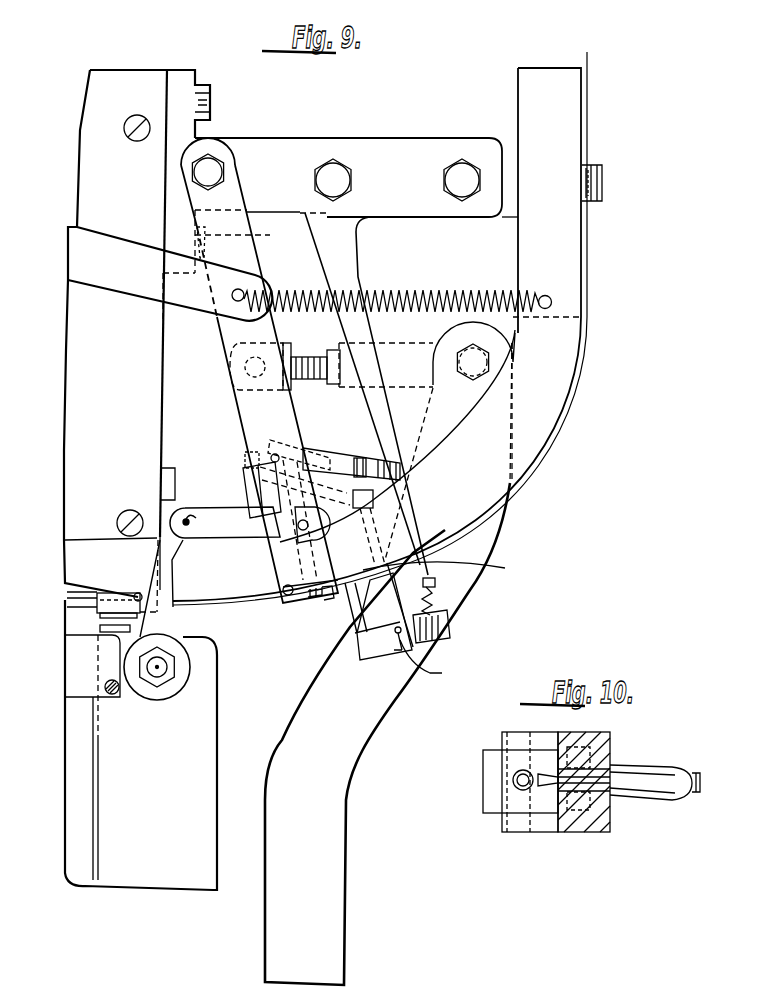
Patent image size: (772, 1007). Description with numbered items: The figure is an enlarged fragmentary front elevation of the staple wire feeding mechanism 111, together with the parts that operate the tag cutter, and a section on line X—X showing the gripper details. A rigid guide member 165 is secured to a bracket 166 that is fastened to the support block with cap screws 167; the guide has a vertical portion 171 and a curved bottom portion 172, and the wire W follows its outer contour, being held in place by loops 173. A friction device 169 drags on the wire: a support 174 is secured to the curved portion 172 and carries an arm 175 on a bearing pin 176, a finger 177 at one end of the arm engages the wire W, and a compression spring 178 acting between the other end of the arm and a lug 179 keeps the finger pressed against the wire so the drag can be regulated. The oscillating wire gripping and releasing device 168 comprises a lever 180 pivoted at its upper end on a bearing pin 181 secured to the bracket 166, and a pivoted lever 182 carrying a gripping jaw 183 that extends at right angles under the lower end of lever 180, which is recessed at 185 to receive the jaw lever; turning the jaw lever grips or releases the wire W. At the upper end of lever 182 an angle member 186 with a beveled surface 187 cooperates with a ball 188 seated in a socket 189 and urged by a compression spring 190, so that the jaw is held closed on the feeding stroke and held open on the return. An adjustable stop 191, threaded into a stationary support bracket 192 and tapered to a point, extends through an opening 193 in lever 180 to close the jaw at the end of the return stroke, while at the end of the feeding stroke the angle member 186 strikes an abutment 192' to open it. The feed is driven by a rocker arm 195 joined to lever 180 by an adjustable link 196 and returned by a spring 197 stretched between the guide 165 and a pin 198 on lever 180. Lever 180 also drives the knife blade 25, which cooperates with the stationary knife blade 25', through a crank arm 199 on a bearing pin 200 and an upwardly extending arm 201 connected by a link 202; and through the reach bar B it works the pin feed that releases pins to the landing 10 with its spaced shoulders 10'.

In FIG. 9, the reach bar B is at (113, 283).
In FIG. 9, the landing 10 is at (87, 612).
In FIG. 9, the spaced shoulders 10' is at (61, 644).
In FIG. 9, the knife blade 25 is at (116, 563).
In FIG. 9, the stationary knife blade 25' is at (68, 687).
In FIG. 9, the staple wire feeding mechanism 111 is at (233, 439).
In FIG. 9, the rigid guide member 165 is at (619, 137).
In FIG. 9, the bracket 166 is at (273, 147).
In FIG. 9, the cap screws 167 is at (210, 94).
In FIG. 9, the oscillating wire gripping and releasing device 168 is at (298, 579).
In FIG. 9, the friction device 169 is at (348, 632).
In FIG. 9, the vertical portion 171 is at (523, 97).
In FIG. 9, the curved bottom portion 172 is at (475, 493).
In FIG. 9, the loops 173 is at (590, 201).
In FIG. 9, the support 174 is at (454, 569).
In FIG. 9, the arm 175 is at (365, 652).
In FIG. 9, the bearing pin 176 is at (437, 658).
In FIG. 9, the finger 177 is at (352, 612).
In FIG. 9, the compression spring 178 is at (437, 607).
In FIG. 9, the lug 179 is at (436, 583).
In FIG. 9, the lever 180 is at (284, 420).
In FIG. 10, the lever 180 is at (595, 832).
In FIG. 9, the bearing pin 181 is at (215, 167).
In FIG. 9, the pivoted lever 182 is at (283, 547).
In FIG. 10, the pivoted lever 182 is at (542, 800).
In FIG. 9, the gripping jaw 183 is at (300, 607).
In FIG. 10, the recess 185 is at (540, 813).
In FIG. 9, the angle member 186 is at (262, 492).
In FIG. 10, the angle member 186 is at (487, 795).
In FIG. 9, the beveled surface 187 is at (350, 458).
In FIG. 10, the beveled surface 187 is at (528, 757).
In FIG. 9, the ball 188 is at (278, 455).
In FIG. 10, the ball 188 is at (513, 779).
In FIG. 9, the socket 189 is at (256, 458).
In FIG. 9, the compression spring 190 is at (275, 440).
In FIG. 9, the adjustable stop 191 is at (343, 484).
In FIG. 10, the adjustable stop 191 is at (676, 770).
In FIG. 9, the stationary support bracket 192 is at (370, 394).
In FIG. 9, the abutment 192' is at (179, 470).
In FIG. 9, the opening 193 is at (313, 520).
In FIG. 10, the opening 193 is at (612, 766).
In FIG. 9, the rocker arm 195 is at (322, 841).
In FIG. 9, the adjustable link 196 is at (422, 375).
In FIG. 9, the spring 197 is at (405, 296).
In FIG. 9, the pin 198 is at (235, 300).
In FIG. 9, the crank arm 199 is at (167, 622).
In FIG. 9, the bearing pin 200 is at (157, 667).
In FIG. 9, the upwardly extending arm 201 is at (193, 535).
In FIG. 9, the link 202 is at (252, 534).
In FIG. 9, the wire W is at (588, 61).
In FIG. 9, the section line X is at (217, 494).